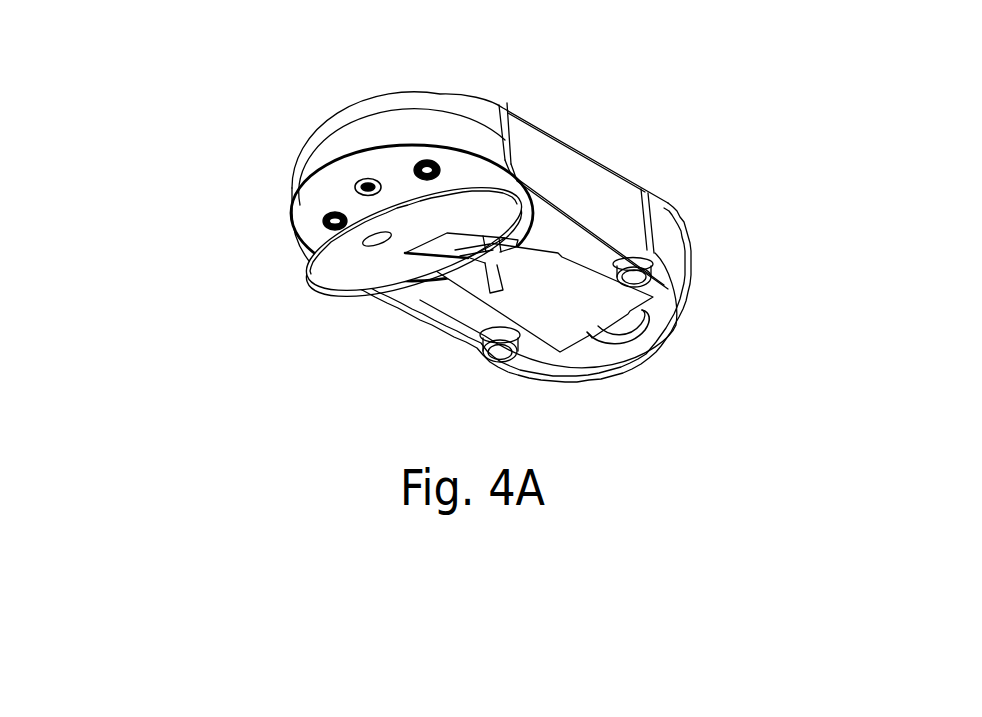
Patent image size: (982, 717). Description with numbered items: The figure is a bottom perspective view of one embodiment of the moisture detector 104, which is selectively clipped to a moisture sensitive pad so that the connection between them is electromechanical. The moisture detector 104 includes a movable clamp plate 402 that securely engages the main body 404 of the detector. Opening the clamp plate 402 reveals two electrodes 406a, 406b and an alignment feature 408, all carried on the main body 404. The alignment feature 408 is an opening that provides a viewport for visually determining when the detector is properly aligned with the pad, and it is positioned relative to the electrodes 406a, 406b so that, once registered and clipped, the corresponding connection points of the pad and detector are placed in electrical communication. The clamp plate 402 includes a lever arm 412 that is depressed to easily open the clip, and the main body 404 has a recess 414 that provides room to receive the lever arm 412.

The moisture detector 104 is at (184, 135).
The clamp plate 402 is at (370, 270).
The main body 404 is at (537, 148).
The electrode 406a is at (440, 167).
The electrode 406b is at (336, 221).
The alignment feature 408 is at (373, 232).
The lever arm 412 is at (510, 245).
The recess 414 is at (514, 275).